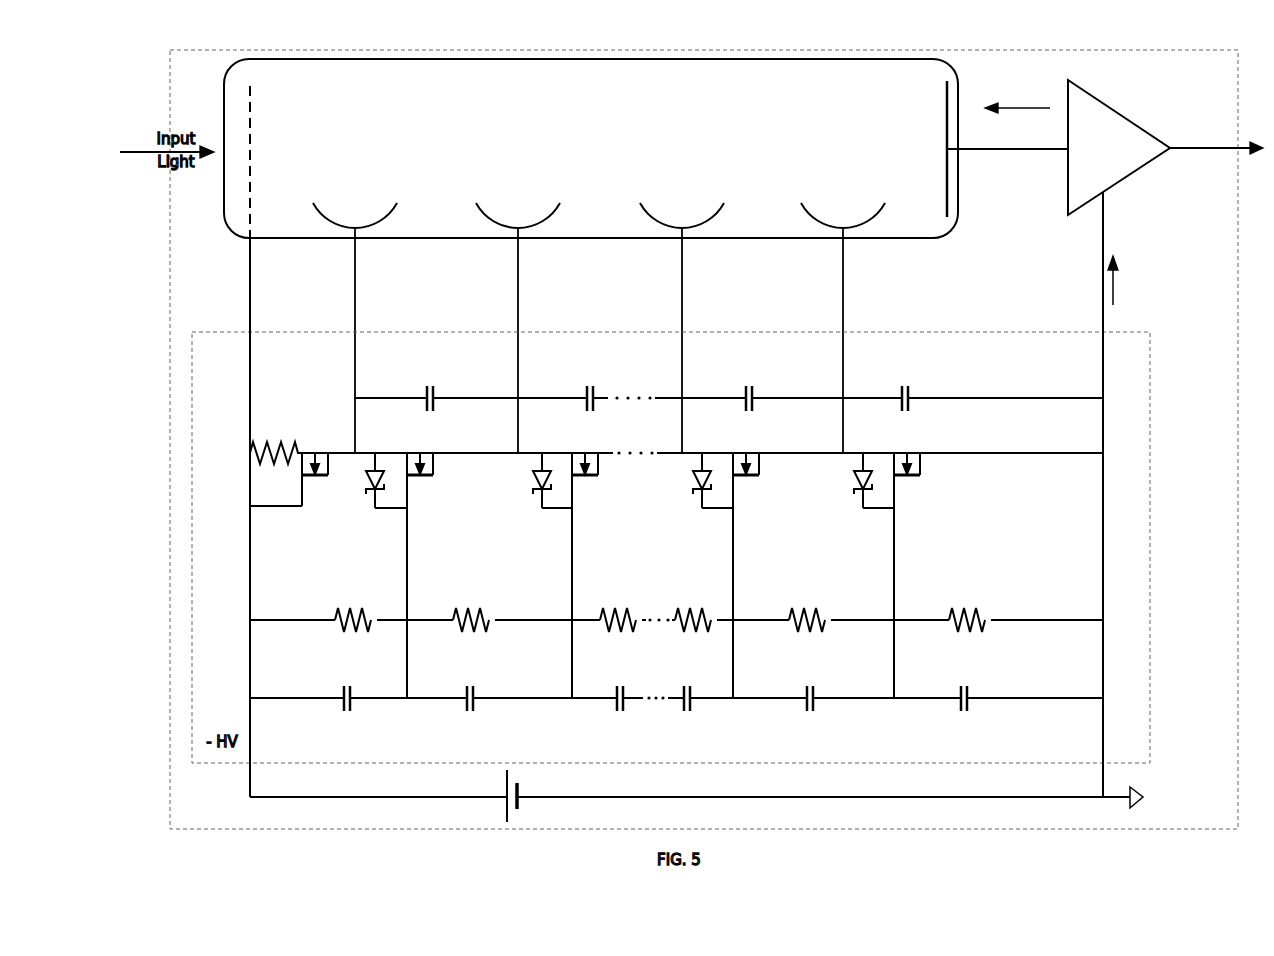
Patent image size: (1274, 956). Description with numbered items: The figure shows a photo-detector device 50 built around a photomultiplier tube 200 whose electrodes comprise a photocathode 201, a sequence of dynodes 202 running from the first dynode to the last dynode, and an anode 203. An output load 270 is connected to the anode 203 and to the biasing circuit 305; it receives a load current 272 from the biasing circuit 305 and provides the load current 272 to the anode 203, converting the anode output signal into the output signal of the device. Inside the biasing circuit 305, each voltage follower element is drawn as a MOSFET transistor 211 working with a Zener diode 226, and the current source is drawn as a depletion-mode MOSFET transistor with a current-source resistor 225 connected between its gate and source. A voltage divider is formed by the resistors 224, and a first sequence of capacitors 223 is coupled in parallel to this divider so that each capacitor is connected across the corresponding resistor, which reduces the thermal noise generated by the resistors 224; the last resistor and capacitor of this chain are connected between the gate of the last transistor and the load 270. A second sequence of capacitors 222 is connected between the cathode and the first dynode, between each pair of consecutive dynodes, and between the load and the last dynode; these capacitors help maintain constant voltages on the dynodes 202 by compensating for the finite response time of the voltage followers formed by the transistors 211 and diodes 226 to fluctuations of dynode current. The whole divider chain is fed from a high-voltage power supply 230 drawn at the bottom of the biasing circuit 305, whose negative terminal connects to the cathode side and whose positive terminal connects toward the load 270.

The photo-detector device 50 is at (630, 50).
The photomultiplier tube 200 is at (990, 193).
The photocathode 201 is at (250, 116).
The dynodes 202 is at (599, 314).
The anode 203 is at (946, 170).
The output load 270 is at (1165, 147).
The load current 272 is at (1073, 187).
The biasing circuit 305 is at (1145, 545).
The MOSFET transistors 211 is at (608, 466).
The second sequence of capacitors 222 is at (689, 388).
The first sequence of capacitors 223 is at (664, 708).
The resistors of the voltage divider 224 is at (660, 645).
The resistor Rcs 225 is at (276, 471).
The Zener diodes 226 is at (612, 489).
The HV power supply 230 is at (744, 792).